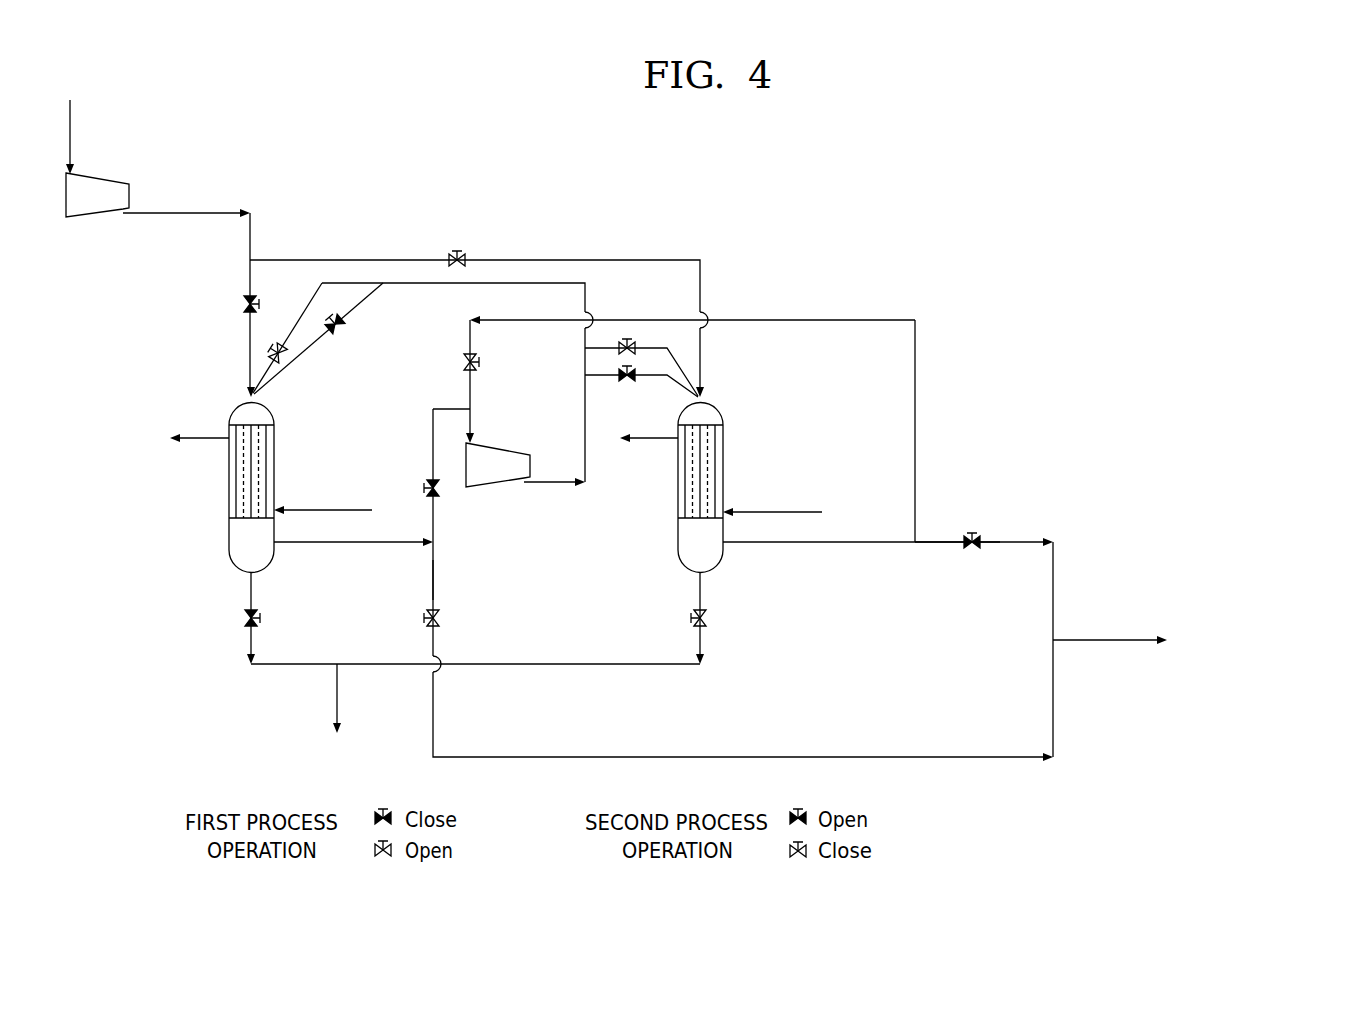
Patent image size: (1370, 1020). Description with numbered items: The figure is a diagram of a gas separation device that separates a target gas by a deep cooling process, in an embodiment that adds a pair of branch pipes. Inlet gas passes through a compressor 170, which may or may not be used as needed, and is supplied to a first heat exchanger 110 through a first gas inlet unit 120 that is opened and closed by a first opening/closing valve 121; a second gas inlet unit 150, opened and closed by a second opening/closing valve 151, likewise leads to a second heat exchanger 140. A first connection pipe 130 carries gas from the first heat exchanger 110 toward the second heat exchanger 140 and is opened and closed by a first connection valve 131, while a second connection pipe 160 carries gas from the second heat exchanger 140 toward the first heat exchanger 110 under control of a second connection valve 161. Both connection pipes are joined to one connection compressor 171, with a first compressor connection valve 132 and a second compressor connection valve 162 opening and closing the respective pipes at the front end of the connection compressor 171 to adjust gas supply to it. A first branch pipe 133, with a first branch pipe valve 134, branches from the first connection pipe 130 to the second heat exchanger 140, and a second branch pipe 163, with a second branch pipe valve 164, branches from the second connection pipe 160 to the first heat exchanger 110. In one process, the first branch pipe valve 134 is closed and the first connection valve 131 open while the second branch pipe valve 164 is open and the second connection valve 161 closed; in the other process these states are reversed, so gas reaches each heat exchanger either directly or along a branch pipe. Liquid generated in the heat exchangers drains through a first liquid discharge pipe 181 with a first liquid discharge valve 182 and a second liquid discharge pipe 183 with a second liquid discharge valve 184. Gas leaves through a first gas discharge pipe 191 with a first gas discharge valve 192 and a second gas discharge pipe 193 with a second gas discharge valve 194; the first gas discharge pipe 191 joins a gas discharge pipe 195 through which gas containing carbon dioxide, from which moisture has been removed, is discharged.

The first heat exchanger 110 is at (230, 537).
The first gas inlet unit 120 is at (250, 356).
The first opening/closing valve 121 is at (242, 300).
The first connection pipe 130 is at (585, 397).
The first connection valve 131 is at (622, 385).
The first compressor connection valve 132 is at (428, 480).
The first branch pipe 133 is at (660, 345).
The first branch pipe valve 134 is at (622, 338).
The second heat exchanger 140 is at (724, 420).
The second gas inlet unit 150 is at (578, 258).
The second opening/closing valve 151 is at (466, 252).
The second connection pipe 160 is at (493, 284).
The second connection valve 161 is at (285, 362).
The second compressor connection valve 162 is at (478, 358).
The second branch pipe 163 is at (370, 294).
The second branch pipe valve 164 is at (343, 330).
The compressor 170 is at (80, 215).
The connection compressor 171 is at (498, 448).
The first liquid discharge pipe 181 is at (248, 590).
The first liquid discharge valve 182 is at (245, 623).
The second liquid discharge pipe 183 is at (703, 592).
The second liquid discharge valve 184 is at (703, 620).
The first gas discharge pipe 191 is at (436, 567).
The first gas discharge valve 192 is at (445, 618).
The second gas discharge pipe 193 is at (932, 540).
The second gas discharge valve 194 is at (978, 532).
The gas discharge pipe 195 is at (1097, 638).